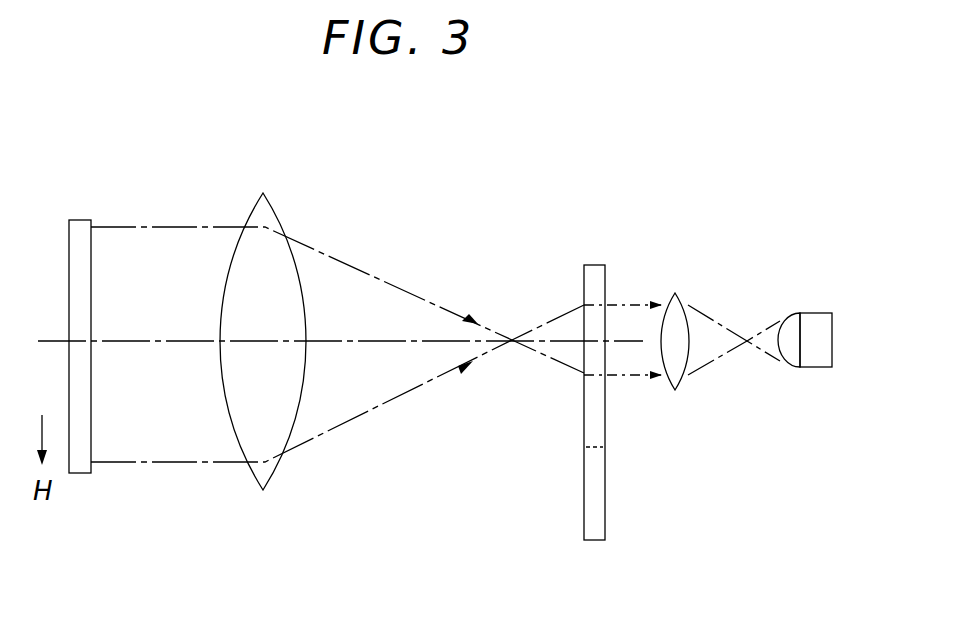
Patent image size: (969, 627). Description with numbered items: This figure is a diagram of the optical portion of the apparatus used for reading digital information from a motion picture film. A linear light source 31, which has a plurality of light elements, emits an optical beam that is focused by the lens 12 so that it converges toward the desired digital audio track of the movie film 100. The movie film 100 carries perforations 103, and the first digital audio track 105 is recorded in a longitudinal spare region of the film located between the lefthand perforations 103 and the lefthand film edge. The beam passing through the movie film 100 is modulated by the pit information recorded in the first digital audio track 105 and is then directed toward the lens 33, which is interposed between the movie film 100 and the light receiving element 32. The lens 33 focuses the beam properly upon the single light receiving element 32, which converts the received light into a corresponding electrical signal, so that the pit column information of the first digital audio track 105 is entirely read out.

The light source 31 is at (79, 218).
The lens 12 is at (277, 210).
The movie film 100 is at (595, 542).
The perforations 103 is at (605, 488).
The first digital audio track 105 is at (611, 321).
The lens 33 is at (673, 300).
The light receiving element 32 is at (815, 368).